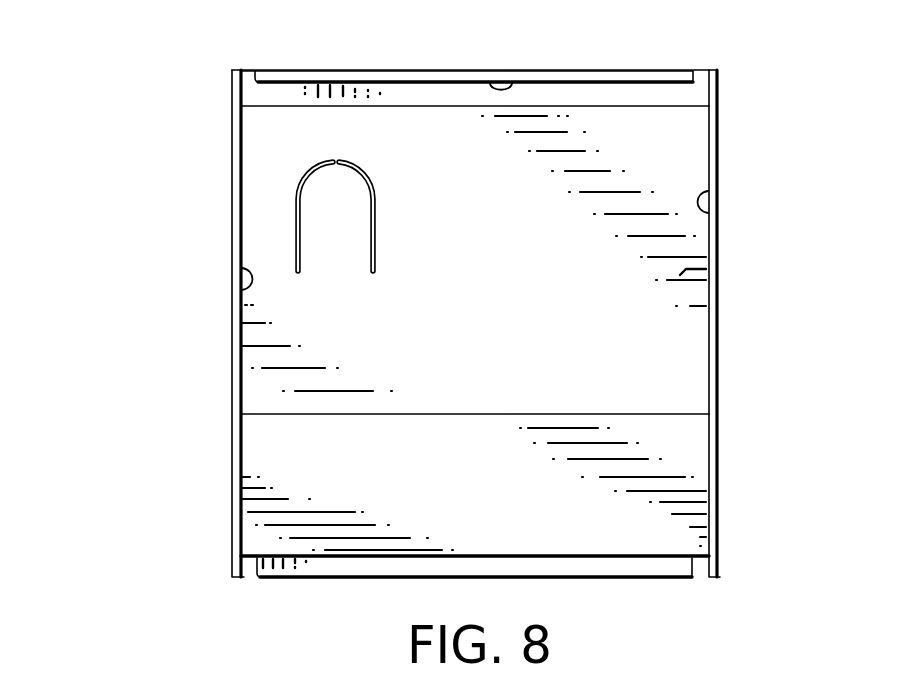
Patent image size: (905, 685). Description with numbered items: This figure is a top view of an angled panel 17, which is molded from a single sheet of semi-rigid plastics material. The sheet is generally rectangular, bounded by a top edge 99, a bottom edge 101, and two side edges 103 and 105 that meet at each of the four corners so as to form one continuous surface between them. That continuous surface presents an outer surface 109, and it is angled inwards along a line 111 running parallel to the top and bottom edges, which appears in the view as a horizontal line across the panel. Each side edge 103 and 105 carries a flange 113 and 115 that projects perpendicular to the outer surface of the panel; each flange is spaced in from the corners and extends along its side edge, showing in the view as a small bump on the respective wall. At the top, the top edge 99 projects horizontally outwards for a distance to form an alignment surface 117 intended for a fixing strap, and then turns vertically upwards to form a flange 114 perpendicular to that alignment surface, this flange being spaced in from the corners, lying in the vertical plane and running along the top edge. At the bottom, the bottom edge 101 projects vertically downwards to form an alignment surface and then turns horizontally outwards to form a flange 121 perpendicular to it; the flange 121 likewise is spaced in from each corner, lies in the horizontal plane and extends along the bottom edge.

The angled panel 17 is at (148, 177).
The top edge 99 is at (690, 70).
The bottom edge 101 is at (669, 578).
The side edge 103 is at (232, 135).
The side edge 105 is at (716, 166).
The outer surface 109 is at (712, 265).
The line running parallel to the top and bottom edges 111 is at (665, 415).
The flange 113 is at (240, 270).
The flange 114 is at (512, 83).
The flange 115 is at (709, 190).
The alignment surface 117 is at (431, 92).
The flange 121 is at (358, 565).